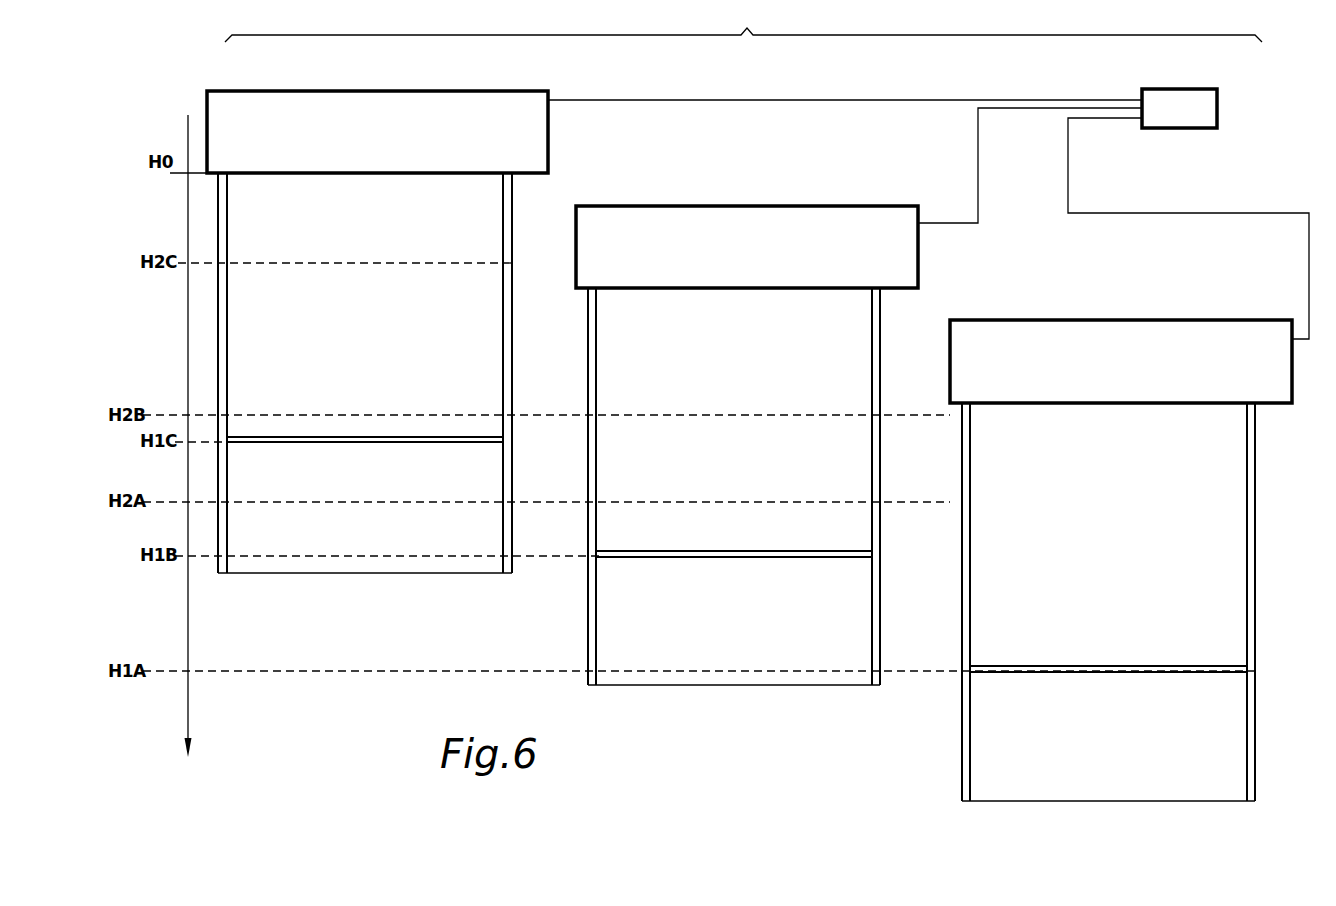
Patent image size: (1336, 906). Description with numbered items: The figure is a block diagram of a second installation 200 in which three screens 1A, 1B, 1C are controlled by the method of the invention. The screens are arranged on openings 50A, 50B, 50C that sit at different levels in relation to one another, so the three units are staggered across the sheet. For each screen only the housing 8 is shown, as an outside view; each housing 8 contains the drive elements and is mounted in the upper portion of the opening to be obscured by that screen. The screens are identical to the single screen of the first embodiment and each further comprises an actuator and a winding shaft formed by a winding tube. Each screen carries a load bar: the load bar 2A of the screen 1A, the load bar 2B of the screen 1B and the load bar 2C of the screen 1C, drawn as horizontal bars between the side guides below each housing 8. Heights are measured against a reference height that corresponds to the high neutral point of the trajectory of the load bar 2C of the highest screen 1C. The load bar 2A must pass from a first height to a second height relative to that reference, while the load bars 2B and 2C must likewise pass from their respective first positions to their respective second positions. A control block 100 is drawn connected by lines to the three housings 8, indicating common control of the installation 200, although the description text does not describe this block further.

The installation 200 is at (743, 21).
The screen 1A is at (1108, 536).
The screen 1B is at (735, 421).
The screen 1C is at (365, 308).
The housing 8 is at (749, 247).
The control unit 100 is at (1179, 108).
The load bar 2A is at (1163, 673).
The load bar 2B is at (790, 558).
The load bar 2C is at (419, 443).
The opening 50A is at (1103, 705).
The opening 50B is at (723, 589).
The opening 50C is at (362, 474).